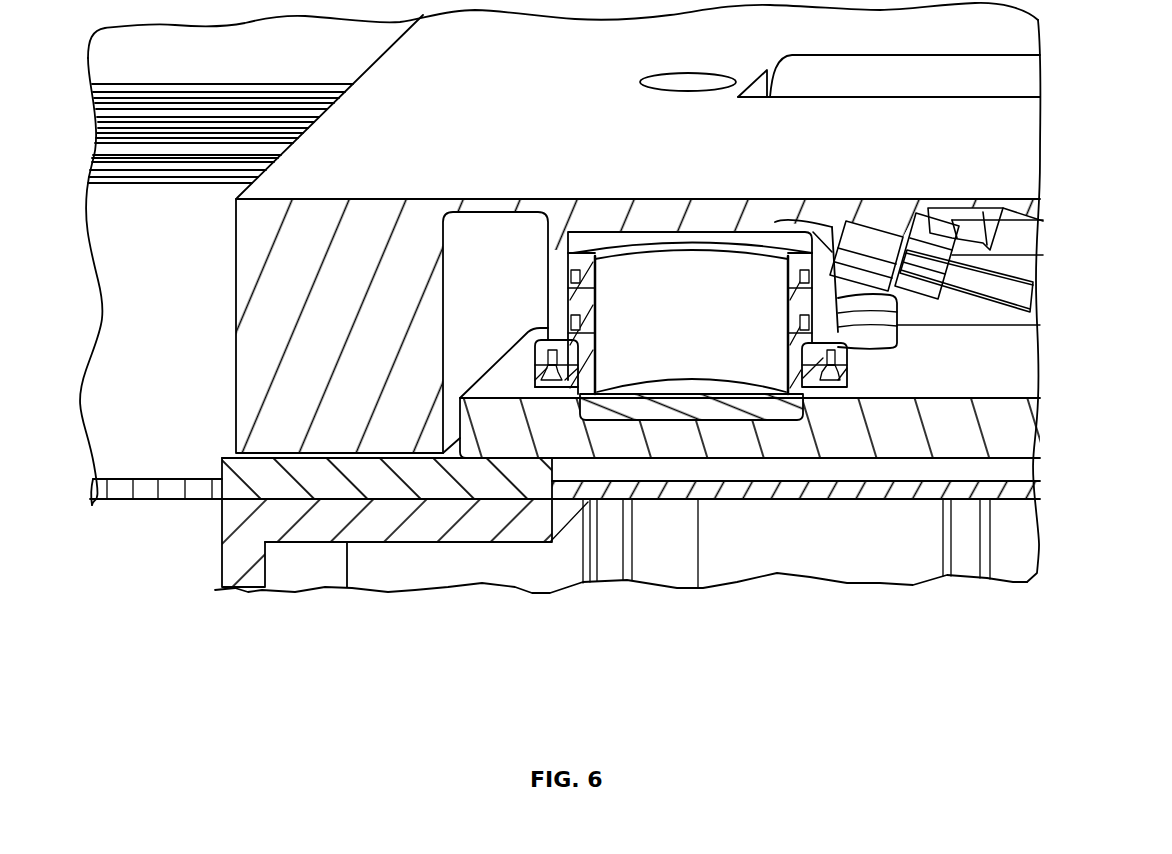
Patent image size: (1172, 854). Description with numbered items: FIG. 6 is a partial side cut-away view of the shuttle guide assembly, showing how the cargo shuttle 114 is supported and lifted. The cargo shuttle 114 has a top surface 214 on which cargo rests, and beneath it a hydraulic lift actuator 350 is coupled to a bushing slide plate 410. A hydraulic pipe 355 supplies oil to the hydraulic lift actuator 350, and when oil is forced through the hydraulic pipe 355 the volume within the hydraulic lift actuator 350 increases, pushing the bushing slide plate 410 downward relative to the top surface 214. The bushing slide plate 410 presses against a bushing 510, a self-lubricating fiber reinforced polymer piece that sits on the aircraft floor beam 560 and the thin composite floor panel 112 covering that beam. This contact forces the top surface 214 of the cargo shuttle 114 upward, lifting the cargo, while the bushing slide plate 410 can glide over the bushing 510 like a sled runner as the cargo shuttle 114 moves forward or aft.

The top surface 214 is at (1007, 32).
The cargo shuttle 114 is at (995, 138).
The hydraulic pipe 355 is at (983, 292).
The hydraulic lift actuator 350 is at (740, 337).
The bushing slide plate 410 is at (995, 432).
The bushing 510 is at (528, 473).
The aircraft floor beam 560 is at (343, 534).
The floor panel 112 is at (181, 505).